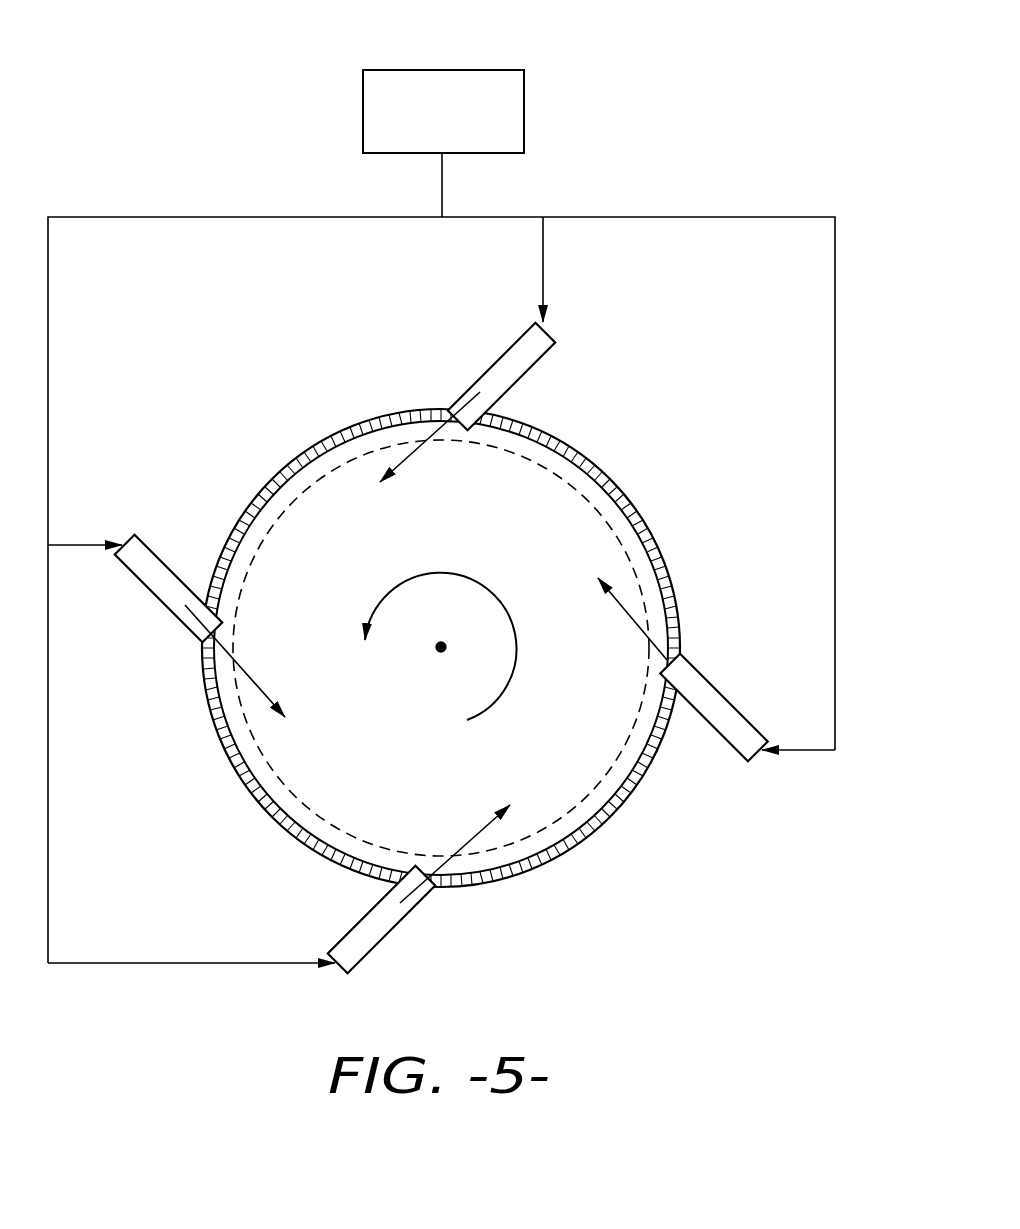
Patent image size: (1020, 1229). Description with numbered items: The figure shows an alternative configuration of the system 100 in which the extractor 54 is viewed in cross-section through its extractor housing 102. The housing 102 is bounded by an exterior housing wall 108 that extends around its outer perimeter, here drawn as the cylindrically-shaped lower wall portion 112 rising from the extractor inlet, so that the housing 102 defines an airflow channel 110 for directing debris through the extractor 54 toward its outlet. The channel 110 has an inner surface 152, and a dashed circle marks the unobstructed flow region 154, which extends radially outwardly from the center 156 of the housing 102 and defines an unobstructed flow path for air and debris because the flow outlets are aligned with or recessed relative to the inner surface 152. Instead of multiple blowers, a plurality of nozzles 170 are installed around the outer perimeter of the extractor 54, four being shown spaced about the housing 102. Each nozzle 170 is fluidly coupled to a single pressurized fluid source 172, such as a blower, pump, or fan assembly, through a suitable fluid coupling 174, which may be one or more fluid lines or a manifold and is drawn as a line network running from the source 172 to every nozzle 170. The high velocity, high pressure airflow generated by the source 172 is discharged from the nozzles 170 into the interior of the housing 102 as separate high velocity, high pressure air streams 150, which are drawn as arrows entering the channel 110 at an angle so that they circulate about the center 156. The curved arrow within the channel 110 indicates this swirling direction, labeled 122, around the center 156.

The system 100 is at (684, 61).
The pressurized fluid source 172 is at (463, 126).
The fluid coupling 174 is at (171, 217).
The extractor 54 is at (463, 622).
The extractor housing 102 is at (583, 400).
The exterior housing wall 108 is at (604, 466).
The lower wall portion 112 is at (252, 502).
The inner surface 152 is at (283, 804).
The unobstructed flow region 154 is at (600, 787).
The nozzles 170 is at (490, 362).
The air streams 150 is at (413, 457).
The rotation direction 122 is at (443, 572).
The airflow channel 110 is at (463, 626).
The center 156 is at (438, 652).